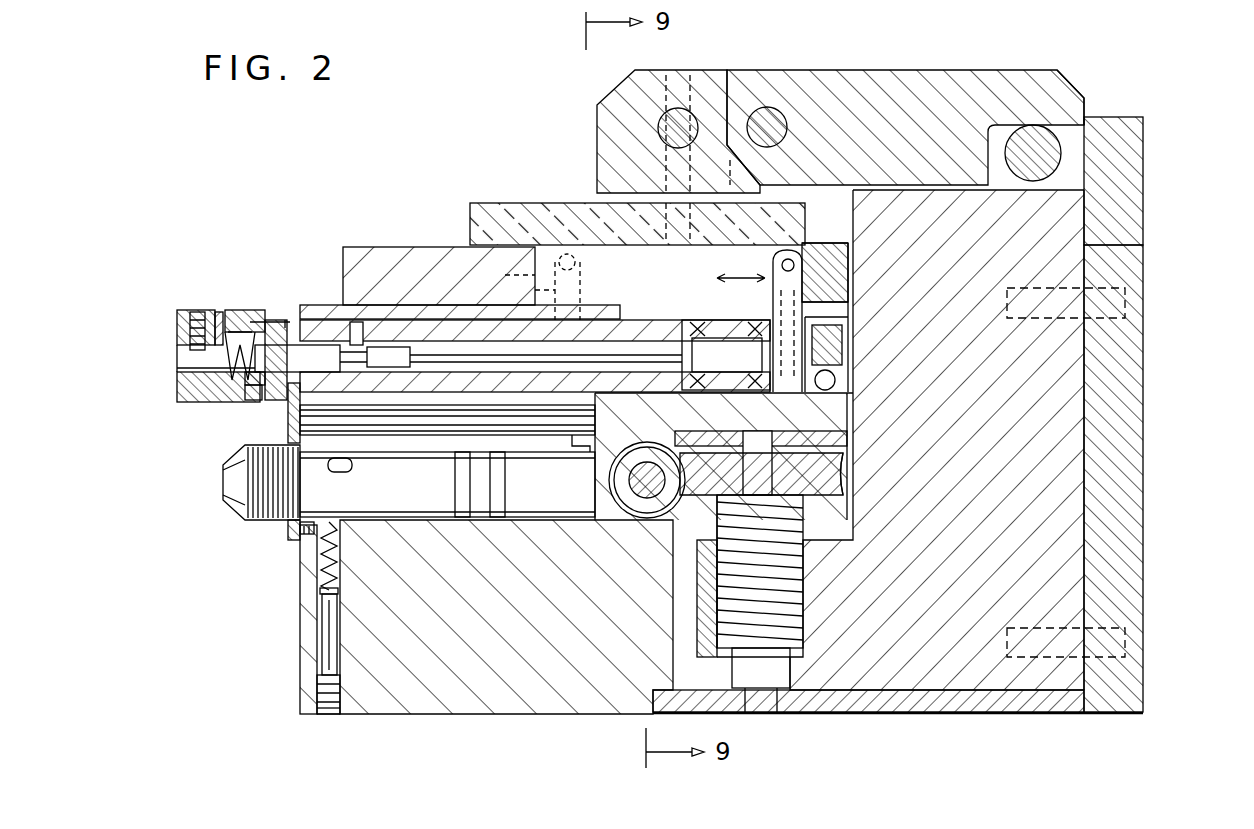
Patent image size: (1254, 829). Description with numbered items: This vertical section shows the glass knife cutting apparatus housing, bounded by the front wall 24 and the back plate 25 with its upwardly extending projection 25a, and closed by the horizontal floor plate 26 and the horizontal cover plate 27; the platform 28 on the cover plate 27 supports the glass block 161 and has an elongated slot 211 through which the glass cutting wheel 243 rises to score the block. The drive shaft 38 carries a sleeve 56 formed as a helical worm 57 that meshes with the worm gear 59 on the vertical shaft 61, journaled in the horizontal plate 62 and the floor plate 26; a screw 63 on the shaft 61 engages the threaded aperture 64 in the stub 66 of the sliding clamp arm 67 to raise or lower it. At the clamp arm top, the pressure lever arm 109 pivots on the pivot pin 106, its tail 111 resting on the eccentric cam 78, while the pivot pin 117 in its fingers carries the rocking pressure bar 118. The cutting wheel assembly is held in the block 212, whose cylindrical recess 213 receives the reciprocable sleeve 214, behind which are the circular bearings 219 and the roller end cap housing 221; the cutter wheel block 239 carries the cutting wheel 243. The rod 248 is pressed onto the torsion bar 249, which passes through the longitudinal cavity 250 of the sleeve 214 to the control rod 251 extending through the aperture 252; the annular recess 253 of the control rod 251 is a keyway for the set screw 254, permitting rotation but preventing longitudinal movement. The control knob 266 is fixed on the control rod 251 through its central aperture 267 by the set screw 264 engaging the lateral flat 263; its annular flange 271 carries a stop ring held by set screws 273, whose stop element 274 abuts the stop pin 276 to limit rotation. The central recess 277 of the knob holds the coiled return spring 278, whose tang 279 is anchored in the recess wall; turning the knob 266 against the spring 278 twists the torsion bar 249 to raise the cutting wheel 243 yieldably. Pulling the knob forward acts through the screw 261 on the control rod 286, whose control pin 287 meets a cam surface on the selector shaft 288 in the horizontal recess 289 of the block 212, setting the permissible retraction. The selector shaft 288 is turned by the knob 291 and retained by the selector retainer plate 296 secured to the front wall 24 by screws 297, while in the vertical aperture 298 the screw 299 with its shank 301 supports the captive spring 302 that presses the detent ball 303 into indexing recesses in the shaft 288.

The front wall 24 is at (305, 625).
The back plate 25 is at (1132, 578).
The upwardly extending projection 25a is at (1140, 158).
The horizontal floor plate 26 is at (1035, 702).
The horizontal cover plate 27 is at (356, 312).
The platform 28 is at (420, 256).
The drive shaft 38 is at (648, 496).
The sleeve 56 is at (622, 474).
The helical worm 57 is at (648, 443).
The worm gear 59 is at (832, 470).
The vertical rotatable shaft 61 is at (757, 440).
The horizontal plate 62 is at (802, 452).
The screw 63 is at (792, 570).
The threaded aperture 64 is at (722, 548).
The horizontally extending stub 66 is at (706, 606).
The sliding clamp arm 67 is at (1080, 478).
The eccentric cam 78 is at (1045, 148).
The pivot pin 106 is at (775, 112).
The pressure lever arm 109 is at (940, 80).
The tail 111 is at (1065, 85).
The pivot pin 117 is at (688, 116).
The rocking pressure bar 118 is at (604, 125).
The glass block 161 is at (535, 210).
The elongated slot 211 is at (770, 262).
The block 212 is at (470, 692).
The cylindrical recess 213 is at (578, 285).
The cylindrical sleeve 214 is at (610, 344).
The circular bearings 219 is at (775, 322).
The roller end cap housing 221 is at (878, 330).
The cutter wheel block 239 is at (497, 275).
The glass cutting wheel 243 is at (820, 250).
The rod 248 is at (726, 355).
The torsion bar 249 is at (658, 352).
The longitudinal cavity 250 is at (650, 332).
The control rod 251 is at (142, 370).
The aperture 252 is at (297, 358).
The annular recess 253 is at (447, 420).
The set screw 254 is at (365, 330).
The screw 261 is at (286, 448).
The lateral flat 263 is at (185, 352).
The set screw 264 is at (188, 330).
The control knob 266 is at (196, 392).
The central aperture 267 is at (186, 374).
The annular flange 271 is at (245, 318).
The set screws 273 is at (256, 398).
The stop element 274 is at (278, 320).
The stop pin 276 is at (275, 405).
The central recess 277 is at (238, 340).
The coiled return spring 278 is at (246, 388).
The tang 279 is at (216, 320).
The control rod 286 is at (447, 421).
The control pin 287 is at (574, 449).
The selector shaft 288 is at (447, 484).
The horizontal recess 289 is at (410, 518).
The knob 291 is at (232, 480).
The selector retainer plate 296 is at (286, 522).
The screws 297 is at (298, 530).
The vertical aperture 298 is at (325, 632).
The screw 299 is at (324, 710).
The elongated shank 301 is at (330, 668).
The captive spring 302 is at (322, 562).
The detent ball 303 is at (320, 540).